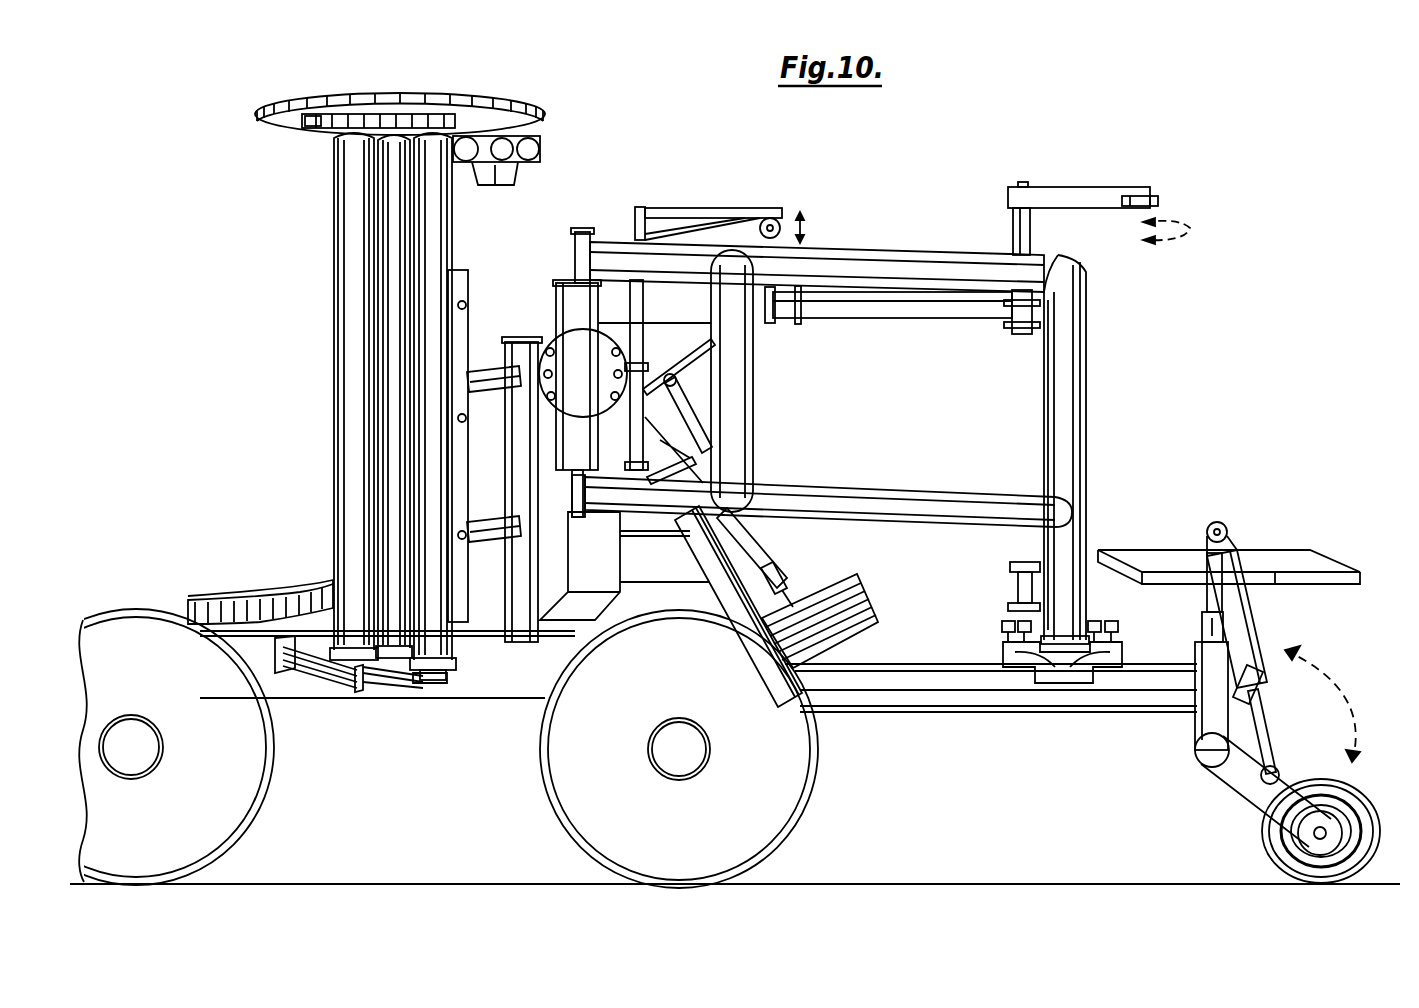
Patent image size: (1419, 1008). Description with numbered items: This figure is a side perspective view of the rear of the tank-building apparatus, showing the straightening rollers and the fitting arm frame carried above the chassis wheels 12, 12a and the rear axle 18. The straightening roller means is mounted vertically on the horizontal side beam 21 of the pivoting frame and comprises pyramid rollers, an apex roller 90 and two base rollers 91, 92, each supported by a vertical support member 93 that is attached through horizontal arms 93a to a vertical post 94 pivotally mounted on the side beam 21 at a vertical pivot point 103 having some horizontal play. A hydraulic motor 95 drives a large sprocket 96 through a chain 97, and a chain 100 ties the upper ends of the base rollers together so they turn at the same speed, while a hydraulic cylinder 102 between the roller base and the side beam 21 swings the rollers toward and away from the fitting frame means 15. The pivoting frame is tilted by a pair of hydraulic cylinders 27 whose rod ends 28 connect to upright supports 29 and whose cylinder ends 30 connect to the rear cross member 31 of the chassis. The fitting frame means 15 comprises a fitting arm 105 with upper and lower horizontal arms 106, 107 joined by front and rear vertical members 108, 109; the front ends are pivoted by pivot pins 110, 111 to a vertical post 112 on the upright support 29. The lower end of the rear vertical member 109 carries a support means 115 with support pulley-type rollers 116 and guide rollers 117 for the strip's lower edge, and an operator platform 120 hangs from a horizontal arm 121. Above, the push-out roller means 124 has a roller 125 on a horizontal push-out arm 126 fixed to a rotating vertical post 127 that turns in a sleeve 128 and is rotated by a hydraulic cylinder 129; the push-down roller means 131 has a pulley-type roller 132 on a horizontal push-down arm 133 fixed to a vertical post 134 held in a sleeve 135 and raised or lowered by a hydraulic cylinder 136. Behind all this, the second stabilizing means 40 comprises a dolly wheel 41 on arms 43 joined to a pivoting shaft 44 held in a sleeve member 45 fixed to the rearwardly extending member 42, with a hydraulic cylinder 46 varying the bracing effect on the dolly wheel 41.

The wheels 12 is at (243, 768).
The rear wheel 12a is at (775, 790).
The fitting frame means 15 is at (852, 244).
The rear axle 18 is at (862, 630).
The horizontal side beam 21 is at (502, 680).
The hydraulic cylinders 27 is at (708, 588).
The rod ends 28 is at (678, 429).
The upright supports 29 is at (558, 580).
The cylinder ends 30 is at (786, 578).
The rear cross member 31 is at (836, 582).
The second stabilizing means 40 is at (1226, 800).
The dolly wheel 41 is at (1358, 794).
The rearwardly extending member 42 is at (905, 700).
The arms 43 is at (1284, 790).
The pivoting shaft 44 is at (1204, 604).
The sleeve member 45 is at (1195, 650).
The hydraulic cylinder 46 is at (1254, 622).
The apex roller 90 is at (440, 236).
The base roller 91 is at (333, 182).
The base roller 92 is at (372, 230).
The vertical support member 93 is at (462, 280).
The horizontal arms 93a is at (478, 370).
The vertical post 94 is at (505, 450).
The hydraulic motor 95 is at (512, 172).
The large sprocket 96 is at (330, 100).
The chain 97 is at (374, 96).
The chain 100 is at (325, 125).
The hydraulic cylinder 102 is at (296, 690).
The vertical pivot point 103 is at (550, 302).
The fitting arm 105 is at (1043, 388).
The upper horizontal arm 106 is at (948, 258).
The lower horizontal arm 107 is at (886, 496).
The front vertical member 108 is at (740, 378).
The rear vertical member 109 is at (1086, 388).
The pivot pin 110 is at (572, 250).
The pivot pin 111 is at (584, 516).
The vertical post 112 is at (562, 282).
The support means 115 is at (1000, 646).
The support pulley-type rollers 116 is at (1060, 690).
The guide rollers 117 is at (1004, 624).
The platform 120 is at (1296, 552).
The horizontal arm 121 is at (1092, 568).
The push-out roller means 124 is at (1090, 182).
The roller 125 is at (1160, 200).
The horizontal push-out arm 126 is at (1072, 192).
The rotating vertical post 127 is at (1020, 182).
The sleeve 128 is at (1032, 230).
The hydraulic cylinder 129 is at (852, 315).
The push-down roller means 131 is at (700, 200).
The pulley-type roller 132 is at (785, 222).
The horizontal push-down arm 133 is at (730, 208).
The vertical post 134 is at (634, 222).
The sleeve 135 is at (648, 283).
The hydraulic cylinder 136 is at (650, 372).